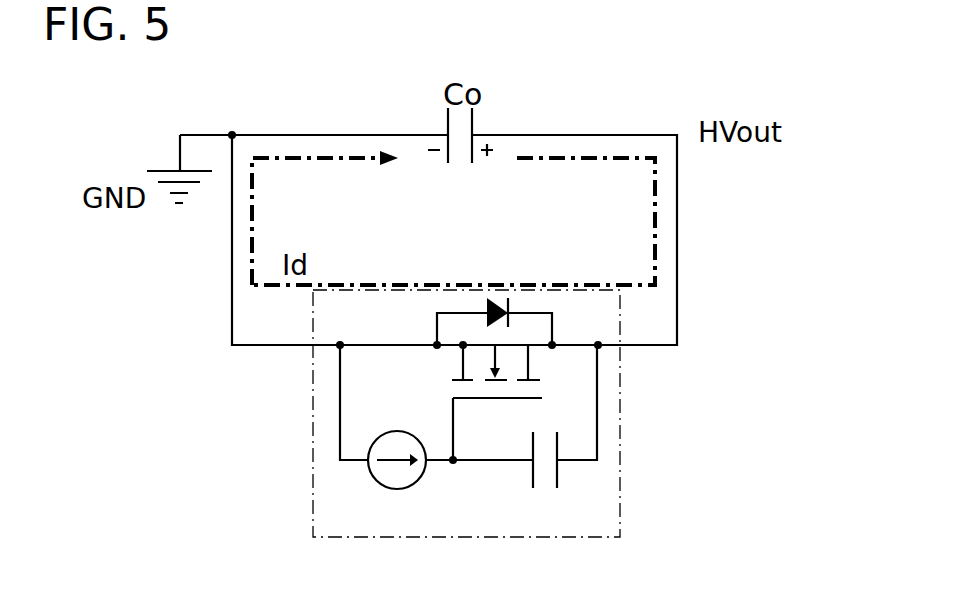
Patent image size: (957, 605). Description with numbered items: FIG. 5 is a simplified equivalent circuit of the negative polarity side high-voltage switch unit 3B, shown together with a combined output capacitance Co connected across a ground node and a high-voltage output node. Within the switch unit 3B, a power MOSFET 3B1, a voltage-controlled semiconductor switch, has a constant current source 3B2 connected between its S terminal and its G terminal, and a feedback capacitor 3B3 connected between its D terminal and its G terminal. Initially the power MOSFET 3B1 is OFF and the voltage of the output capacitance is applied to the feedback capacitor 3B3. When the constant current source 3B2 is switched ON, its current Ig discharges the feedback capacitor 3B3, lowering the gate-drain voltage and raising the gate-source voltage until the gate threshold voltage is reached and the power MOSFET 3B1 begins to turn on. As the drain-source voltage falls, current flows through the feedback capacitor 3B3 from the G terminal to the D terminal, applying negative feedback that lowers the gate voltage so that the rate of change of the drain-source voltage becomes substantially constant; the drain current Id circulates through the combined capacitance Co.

The negative polarity side high-voltage switch unit 3B is at (620, 423).
The power MOSFET 3B1 is at (452, 340).
The constant current source 3B2 is at (375, 480).
The feedback capacitor 3B3 is at (533, 473).